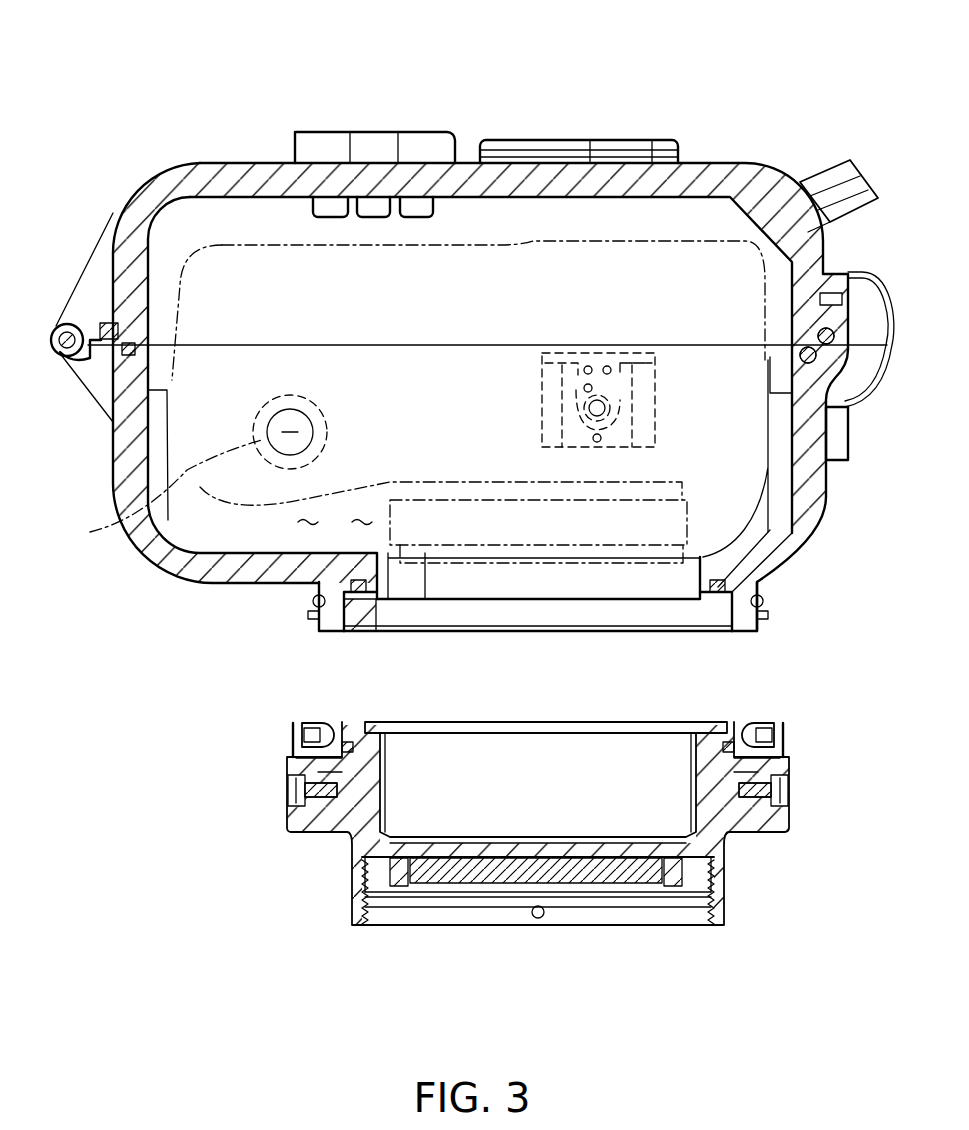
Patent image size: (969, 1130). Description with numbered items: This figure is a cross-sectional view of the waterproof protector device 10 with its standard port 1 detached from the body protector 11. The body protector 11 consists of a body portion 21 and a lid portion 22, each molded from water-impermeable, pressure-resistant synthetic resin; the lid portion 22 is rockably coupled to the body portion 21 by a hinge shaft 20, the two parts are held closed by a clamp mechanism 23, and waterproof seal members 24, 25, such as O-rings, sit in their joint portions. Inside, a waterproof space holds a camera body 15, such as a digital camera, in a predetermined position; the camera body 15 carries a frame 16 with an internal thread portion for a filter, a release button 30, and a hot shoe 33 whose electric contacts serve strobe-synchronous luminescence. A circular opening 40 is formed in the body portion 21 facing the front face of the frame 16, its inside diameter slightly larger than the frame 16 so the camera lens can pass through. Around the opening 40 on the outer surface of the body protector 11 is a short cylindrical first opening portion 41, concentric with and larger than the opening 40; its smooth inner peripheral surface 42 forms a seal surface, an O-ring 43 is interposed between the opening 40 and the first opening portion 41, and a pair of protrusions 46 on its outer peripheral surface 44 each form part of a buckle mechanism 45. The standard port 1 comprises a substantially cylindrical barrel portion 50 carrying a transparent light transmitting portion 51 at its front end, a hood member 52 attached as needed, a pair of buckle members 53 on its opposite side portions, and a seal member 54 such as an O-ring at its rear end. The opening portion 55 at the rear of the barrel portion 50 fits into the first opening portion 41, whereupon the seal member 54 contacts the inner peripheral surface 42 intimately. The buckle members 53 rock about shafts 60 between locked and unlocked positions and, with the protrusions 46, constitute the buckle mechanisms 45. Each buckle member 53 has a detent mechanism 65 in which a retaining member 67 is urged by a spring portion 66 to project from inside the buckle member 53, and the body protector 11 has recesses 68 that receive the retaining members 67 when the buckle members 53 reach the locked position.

The standard port 1 is at (535, 930).
The waterproof protector device 10 is at (722, 97).
The body protector 11 is at (154, 558).
The camera body 15 is at (745, 282).
The frame 16 is at (688, 522).
The hinge shaft 20 is at (81, 327).
The body portion 21 is at (122, 473).
The lid portion 22 is at (236, 175).
The clamp mechanism 23 is at (878, 395).
The waterproof seal member 24 is at (100, 385).
The waterproof seal member 25 is at (107, 323).
The release button 30 is at (410, 393).
The hot shoe 33 is at (655, 422).
The circular opening 40 is at (390, 572).
The first opening portion 41 is at (330, 631).
The inner peripheral surface 42 is at (352, 612).
The O-ring 43 is at (362, 590).
The outer peripheral surface 44 is at (320, 630).
The buckle mechanism 45 is at (302, 839).
The protrusions 46 is at (308, 615).
The barrel portion 50 is at (380, 783).
The light transmitting portion 51 is at (490, 885).
The hood member 52 is at (380, 895).
The buckle members 53 is at (287, 765).
The seal member 54 is at (347, 740).
The opening portion 55 is at (537, 721).
The shafts 60 is at (287, 792).
The detent mechanism 65 is at (286, 737).
The spring portion 66 is at (308, 730).
The retaining member 67 is at (312, 728).
The recesses 68 is at (313, 599).